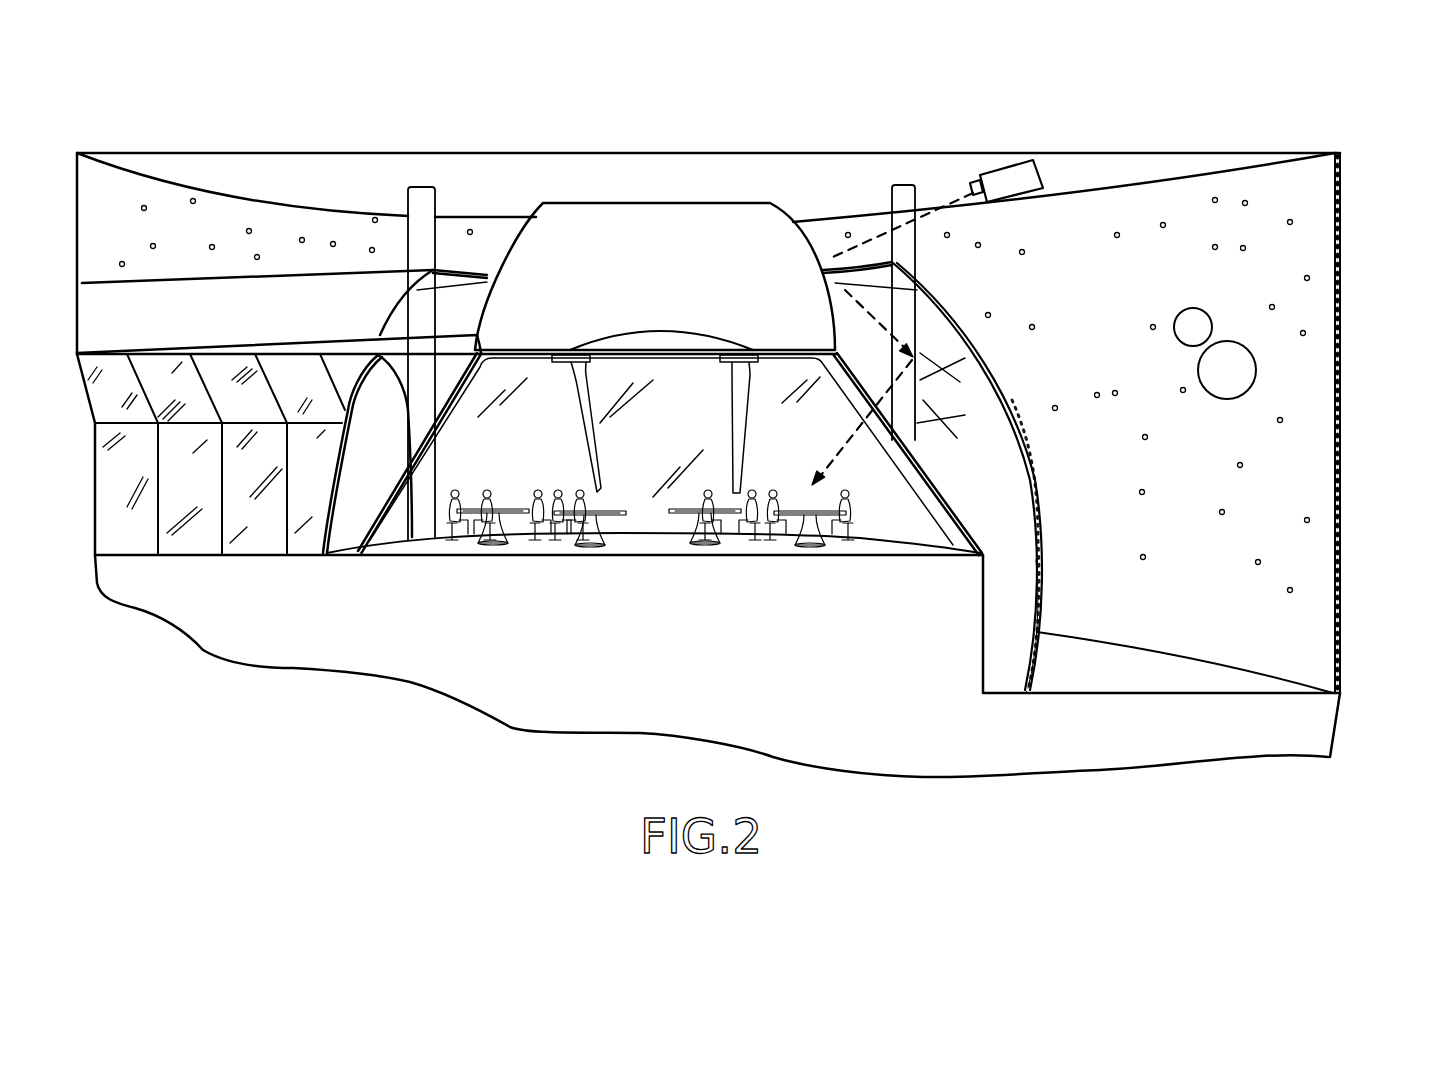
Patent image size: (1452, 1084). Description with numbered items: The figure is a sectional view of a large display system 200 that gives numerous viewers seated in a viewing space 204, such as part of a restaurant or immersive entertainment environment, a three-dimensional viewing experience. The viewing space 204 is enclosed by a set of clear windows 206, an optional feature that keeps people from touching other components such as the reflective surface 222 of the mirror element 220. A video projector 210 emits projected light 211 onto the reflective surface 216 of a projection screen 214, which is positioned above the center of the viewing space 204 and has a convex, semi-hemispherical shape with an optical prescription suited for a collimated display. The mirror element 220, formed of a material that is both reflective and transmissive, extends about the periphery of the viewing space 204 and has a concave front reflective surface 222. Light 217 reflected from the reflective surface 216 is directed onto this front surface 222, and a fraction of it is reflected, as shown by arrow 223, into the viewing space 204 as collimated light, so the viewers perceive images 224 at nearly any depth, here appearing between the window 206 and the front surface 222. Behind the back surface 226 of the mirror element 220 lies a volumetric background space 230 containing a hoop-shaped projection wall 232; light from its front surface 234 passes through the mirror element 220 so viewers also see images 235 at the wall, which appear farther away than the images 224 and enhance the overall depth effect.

The display system 200 is at (224, 105).
The viewing space 204 is at (868, 525).
The windows 206 is at (833, 515).
The video projector 210 is at (1031, 166).
The projected light 211 is at (932, 205).
The projection screen 214 is at (696, 211).
The reflective surface 216 is at (678, 300).
The light 217 is at (850, 320).
The mirror element 220 is at (962, 300).
The front reflective surface 222 is at (1015, 653).
The arrow 223 is at (852, 435).
The images 224 is at (947, 410).
The back surface 226 is at (1030, 597).
The volumetric background space 230 is at (1110, 678).
The projection wall 232 is at (1266, 680).
The front surface 234 is at (1317, 582).
The images 235 is at (1213, 325).